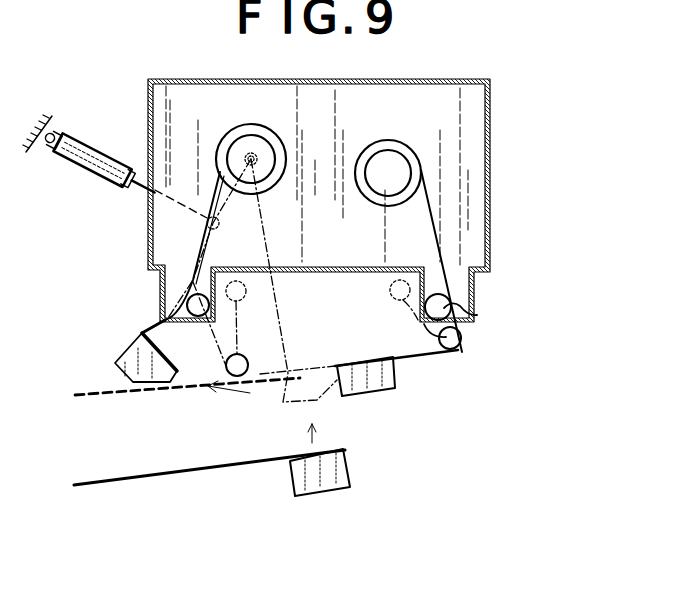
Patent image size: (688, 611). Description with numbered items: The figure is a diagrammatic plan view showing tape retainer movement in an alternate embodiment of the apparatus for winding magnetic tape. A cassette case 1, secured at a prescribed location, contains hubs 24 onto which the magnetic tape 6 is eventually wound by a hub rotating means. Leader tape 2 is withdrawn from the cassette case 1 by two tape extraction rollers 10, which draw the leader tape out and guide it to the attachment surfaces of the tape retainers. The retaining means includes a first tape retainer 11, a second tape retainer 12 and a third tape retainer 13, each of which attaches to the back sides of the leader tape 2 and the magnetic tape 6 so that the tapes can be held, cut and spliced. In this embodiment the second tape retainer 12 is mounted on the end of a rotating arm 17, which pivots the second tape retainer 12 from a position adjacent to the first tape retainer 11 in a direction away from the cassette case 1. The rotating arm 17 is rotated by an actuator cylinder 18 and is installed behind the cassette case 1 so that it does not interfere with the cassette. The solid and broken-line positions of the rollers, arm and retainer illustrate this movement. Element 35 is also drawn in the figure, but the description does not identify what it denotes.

The cassette case 1 is at (490, 128).
The hub 24 is at (396, 148).
The actuator cylinder 18 is at (102, 167).
The rotating arm 17 is at (163, 320).
The tape extraction roller 10 is at (244, 298).
The guide 35 is at (477, 315).
The second tape retainer 12 is at (152, 382).
The leader tape 2 is at (154, 264).
The first tape retainer 11 is at (375, 388).
The magnetic tape 6 is at (90, 398).
The third tape retainer 13 is at (320, 490).